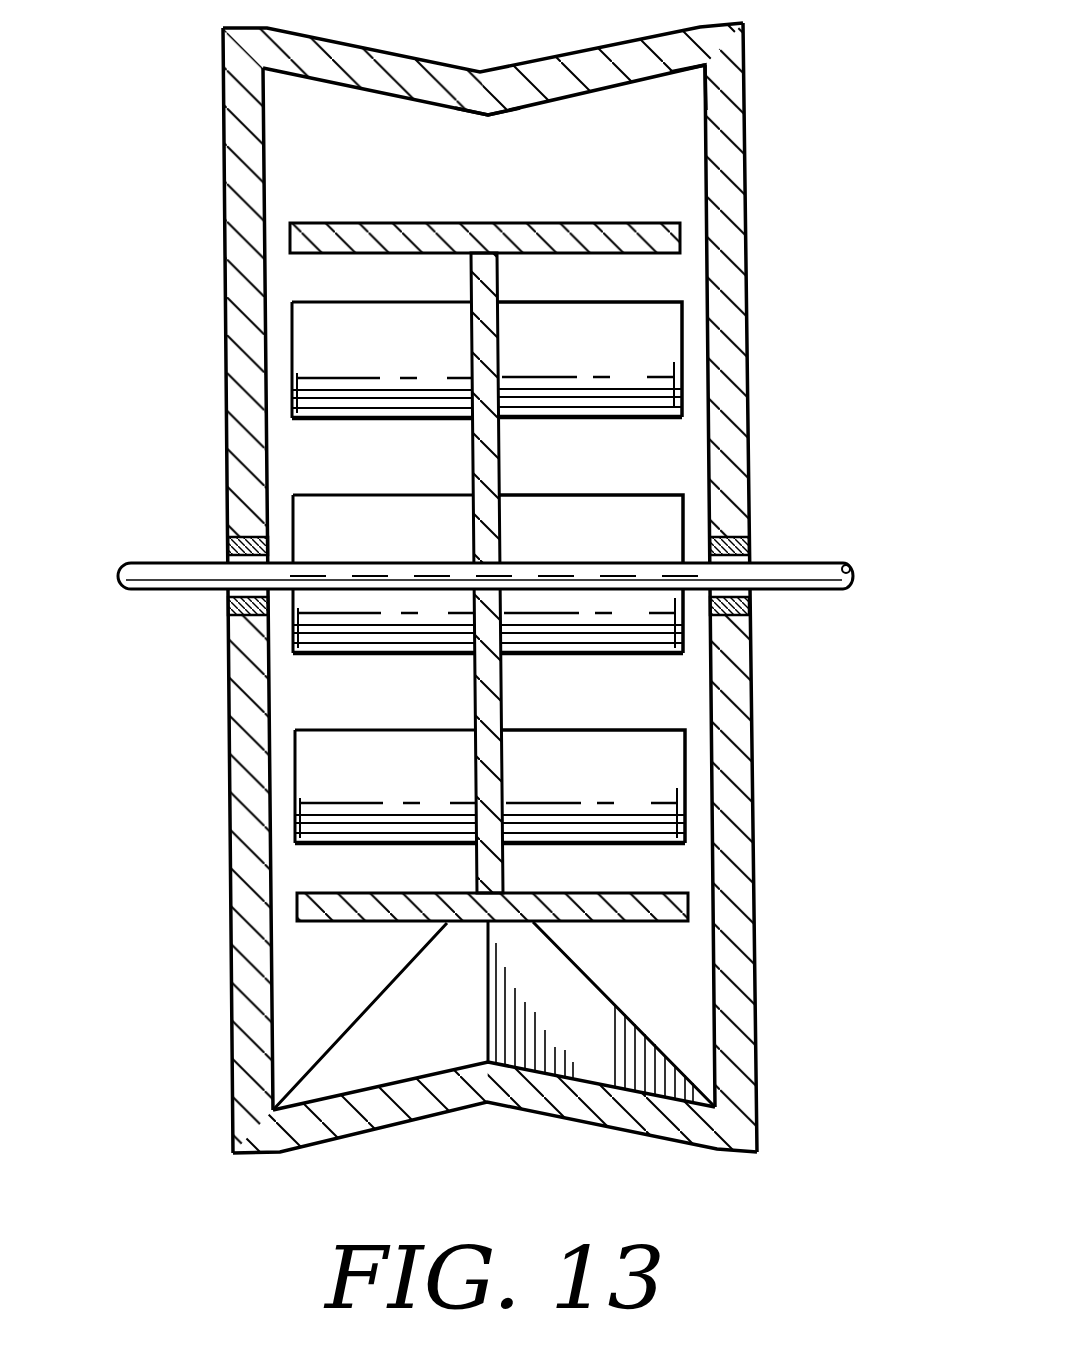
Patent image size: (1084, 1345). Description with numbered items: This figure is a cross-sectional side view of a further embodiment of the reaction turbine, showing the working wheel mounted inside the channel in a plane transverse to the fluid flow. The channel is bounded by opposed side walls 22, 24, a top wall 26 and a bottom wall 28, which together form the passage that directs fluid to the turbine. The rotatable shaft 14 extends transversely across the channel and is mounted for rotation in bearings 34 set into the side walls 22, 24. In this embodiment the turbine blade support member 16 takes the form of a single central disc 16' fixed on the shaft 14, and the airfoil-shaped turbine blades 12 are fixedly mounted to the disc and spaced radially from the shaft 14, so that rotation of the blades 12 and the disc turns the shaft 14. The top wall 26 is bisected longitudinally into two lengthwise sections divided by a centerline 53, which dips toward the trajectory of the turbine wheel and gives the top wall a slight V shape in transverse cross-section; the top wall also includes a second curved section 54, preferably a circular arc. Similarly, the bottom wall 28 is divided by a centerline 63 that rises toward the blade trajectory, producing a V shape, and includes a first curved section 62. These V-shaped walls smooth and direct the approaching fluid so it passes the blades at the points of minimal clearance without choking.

The turbine blades 12 is at (497, 233).
The rotatable shaft 14 is at (848, 565).
The turbine blade support member 16 is at (758, 587).
The single central disc 16' is at (437, 573).
The side wall 22 is at (509, 589).
The side wall 24 is at (243, 1005).
The top wall 26 is at (560, 73).
The bottom wall 28 is at (615, 1113).
The bearings 34 is at (227, 607).
The centerline 53 is at (488, 115).
The second curved section 54 is at (657, 78).
The first curved section 62 is at (683, 1062).
The centerline 63 is at (492, 1020).